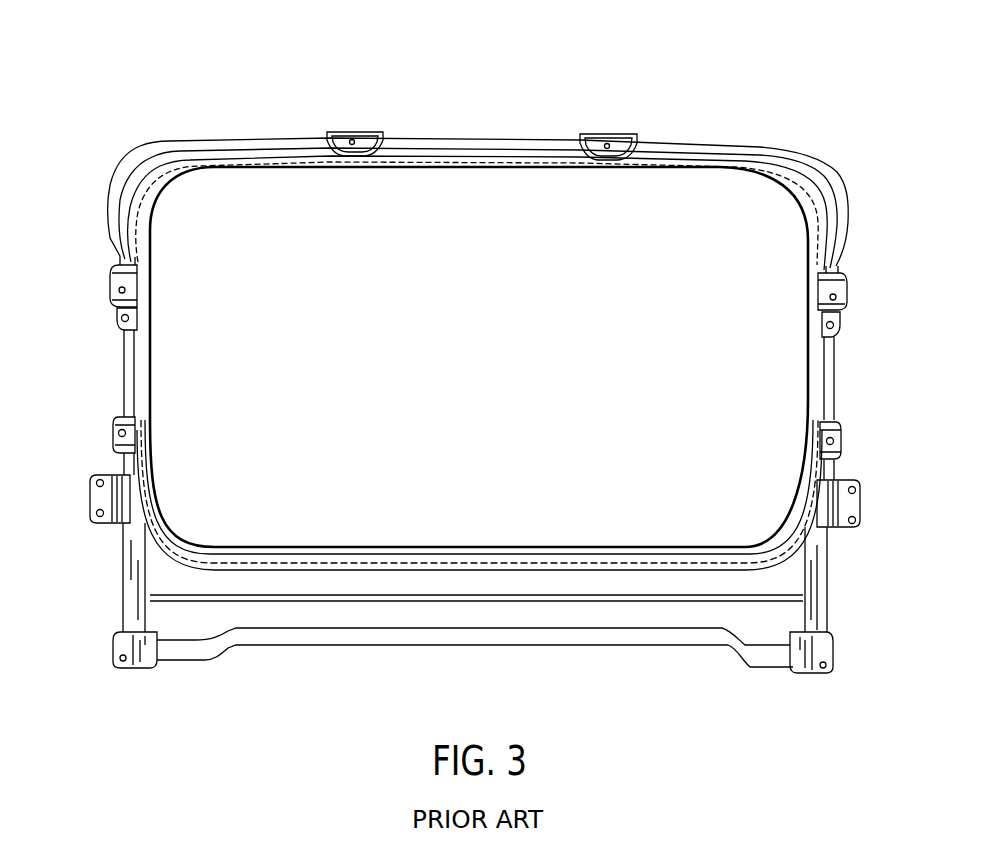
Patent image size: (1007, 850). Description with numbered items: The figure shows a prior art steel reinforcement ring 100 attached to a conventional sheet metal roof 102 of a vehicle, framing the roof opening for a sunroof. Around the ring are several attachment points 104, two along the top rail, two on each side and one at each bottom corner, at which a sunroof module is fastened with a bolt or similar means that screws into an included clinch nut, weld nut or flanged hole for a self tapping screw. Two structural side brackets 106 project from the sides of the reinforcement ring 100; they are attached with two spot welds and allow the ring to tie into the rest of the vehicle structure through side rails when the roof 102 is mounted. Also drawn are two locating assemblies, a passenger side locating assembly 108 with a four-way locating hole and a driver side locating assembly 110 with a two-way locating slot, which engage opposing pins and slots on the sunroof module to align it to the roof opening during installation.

The steel reinforcement ring 100 is at (475, 383).
The sheet metal roof 102 is at (258, 137).
The attachment points 104 is at (368, 131).
The structural side brackets 106 is at (93, 498).
The locating assembly (passenger side) 108 is at (117, 317).
The locating assembly (driver side) 110 is at (848, 332).